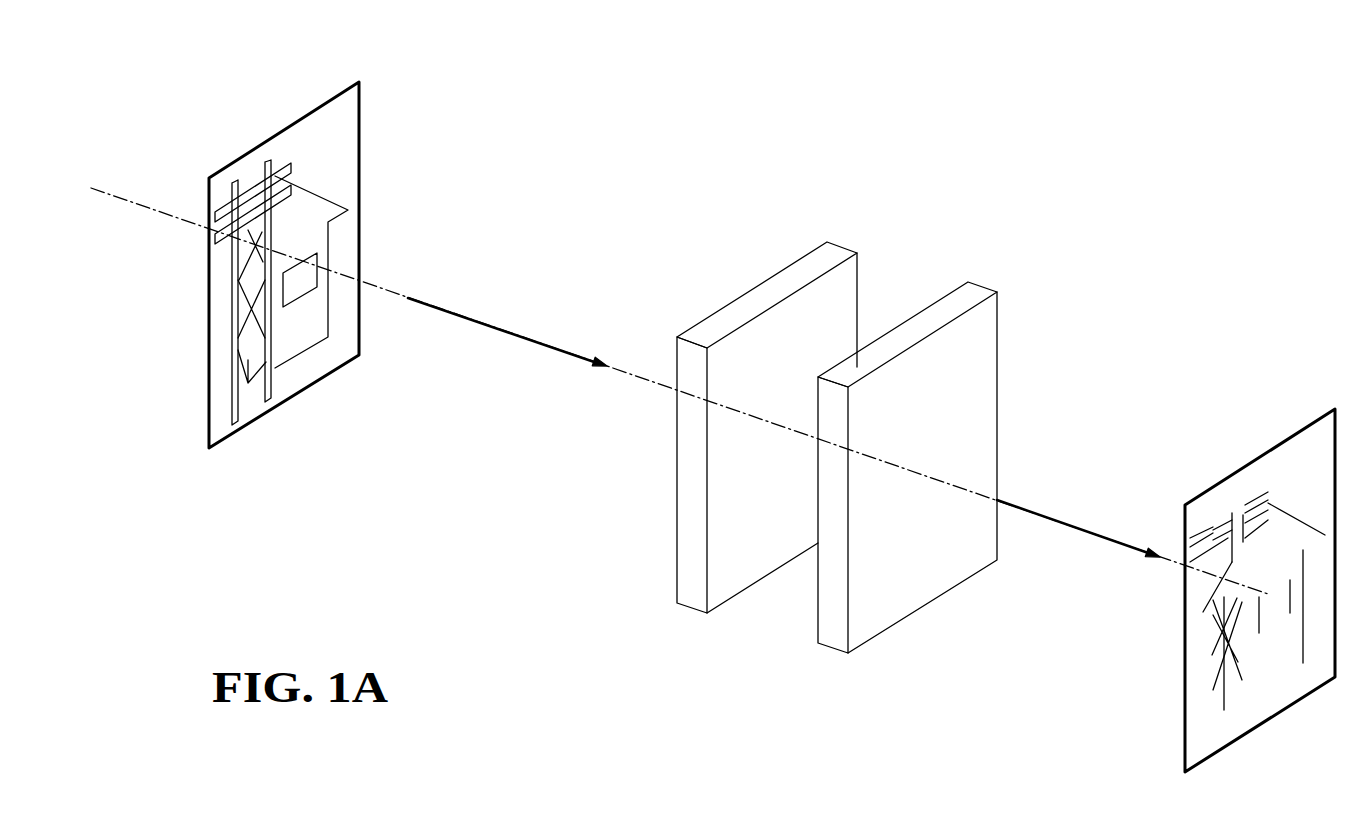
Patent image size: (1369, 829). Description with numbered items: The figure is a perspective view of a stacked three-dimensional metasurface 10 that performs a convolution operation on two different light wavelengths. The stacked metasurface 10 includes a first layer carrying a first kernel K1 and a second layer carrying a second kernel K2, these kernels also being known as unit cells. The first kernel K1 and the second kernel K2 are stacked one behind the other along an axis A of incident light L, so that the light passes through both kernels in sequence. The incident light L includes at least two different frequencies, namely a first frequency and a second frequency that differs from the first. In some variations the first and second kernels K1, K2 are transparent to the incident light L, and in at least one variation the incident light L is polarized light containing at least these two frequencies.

The stacked 3D metasurface 10 is at (863, 349).
The first kernel K1 is at (767, 427).
The second kernel K2 is at (907, 467).
The incident light L is at (470, 318).
The axis A is at (667, 386).